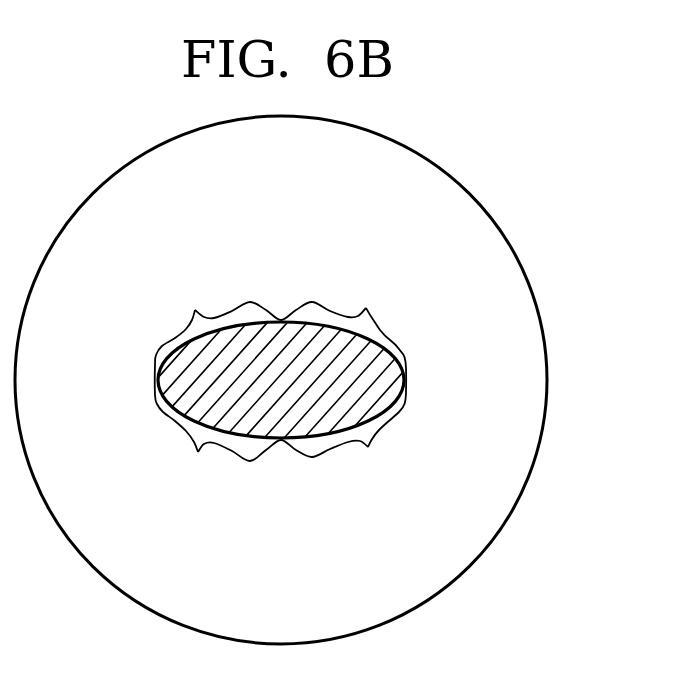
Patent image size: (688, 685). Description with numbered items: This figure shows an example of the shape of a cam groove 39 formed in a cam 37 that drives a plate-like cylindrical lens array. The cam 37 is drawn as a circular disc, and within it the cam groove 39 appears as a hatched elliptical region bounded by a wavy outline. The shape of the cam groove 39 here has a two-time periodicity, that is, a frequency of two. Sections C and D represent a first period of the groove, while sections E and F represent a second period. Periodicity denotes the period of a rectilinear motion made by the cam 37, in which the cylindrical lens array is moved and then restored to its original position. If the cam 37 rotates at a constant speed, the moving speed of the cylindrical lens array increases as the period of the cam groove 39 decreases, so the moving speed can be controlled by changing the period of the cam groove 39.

The cam 37 is at (490, 517).
The cam groove 39 is at (321, 380).
The section C is at (271, 301).
The section D is at (384, 362).
The section E is at (289, 460).
The section F is at (176, 396).